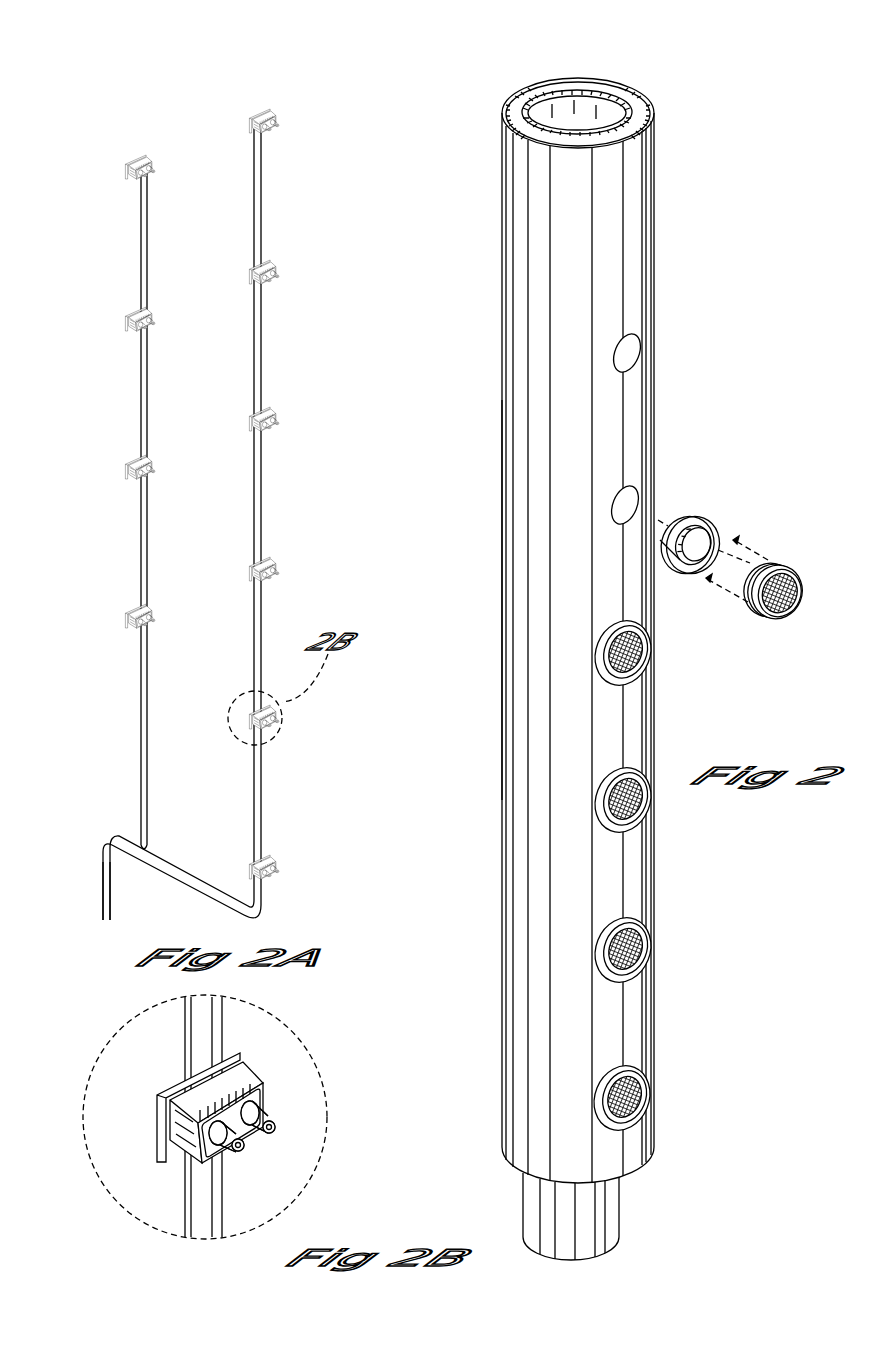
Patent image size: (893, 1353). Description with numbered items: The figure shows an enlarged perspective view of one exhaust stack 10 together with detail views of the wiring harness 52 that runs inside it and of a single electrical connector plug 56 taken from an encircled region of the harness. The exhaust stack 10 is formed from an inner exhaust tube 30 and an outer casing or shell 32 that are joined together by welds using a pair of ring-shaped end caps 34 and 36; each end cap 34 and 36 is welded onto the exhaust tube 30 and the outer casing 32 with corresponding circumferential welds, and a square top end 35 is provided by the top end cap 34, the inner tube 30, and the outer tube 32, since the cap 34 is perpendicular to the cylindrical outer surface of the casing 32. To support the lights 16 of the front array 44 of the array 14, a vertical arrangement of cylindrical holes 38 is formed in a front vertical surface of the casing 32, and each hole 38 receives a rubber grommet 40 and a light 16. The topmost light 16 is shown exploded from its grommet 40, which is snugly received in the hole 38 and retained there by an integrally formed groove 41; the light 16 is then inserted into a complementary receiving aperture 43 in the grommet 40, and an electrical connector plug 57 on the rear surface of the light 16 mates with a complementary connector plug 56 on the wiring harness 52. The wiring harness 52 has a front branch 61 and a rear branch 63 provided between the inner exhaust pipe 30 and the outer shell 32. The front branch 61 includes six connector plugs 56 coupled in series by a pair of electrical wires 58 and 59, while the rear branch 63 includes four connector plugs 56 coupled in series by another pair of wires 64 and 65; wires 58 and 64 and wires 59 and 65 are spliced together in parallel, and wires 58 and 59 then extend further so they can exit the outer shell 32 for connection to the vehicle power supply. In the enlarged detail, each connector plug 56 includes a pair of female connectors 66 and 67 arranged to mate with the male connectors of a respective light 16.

In FIG. 2, the exhaust stack 10 is at (455, 140).
In FIG. 2, the array 14 is at (666, 582).
In FIG. 2, the light 16 is at (790, 618).
In FIG. 2, the inner exhaust tube 30 is at (566, 112).
In FIG. 2, the outer casing 32 is at (500, 600).
In FIG. 2, the top end cap 34 is at (506, 106).
In FIG. 2, the square top end 35 is at (655, 93).
In FIG. 2, the end cap 36 is at (640, 1165).
In FIG. 2, the aperture 38 is at (643, 357).
In FIG. 2, the grommet 40 is at (628, 1072).
In FIG. 2, the groove 41 is at (687, 521).
In FIG. 2, the receiving aperture 43 is at (718, 538).
In FIG. 2, the front array 44 is at (671, 676).
In FIG. 2A, the electrical wiring harness 52 is at (205, 488).
In FIG. 2A, the electrical connector plug 56 is at (130, 325).
In FIG. 2B, the electrical connector plug 56 is at (272, 1111).
In FIG. 2, the electrical connector plug 57 is at (763, 566).
In FIG. 2A, the electrical wire 58 is at (248, 836).
In FIG. 2B, the electrical wire 58 is at (184, 1205).
In FIG. 2A, the electrical wire 59 is at (262, 818).
In FIG. 2B, the electrical wire 59 is at (220, 1178).
In FIG. 2A, the front branch 61 is at (266, 505).
In FIG. 2A, the rear branch 63 is at (137, 582).
In FIG. 2A, the electrical wire 64 is at (138, 716).
In FIG. 2A, the electrical wire 65 is at (148, 698).
In FIG. 2B, the female connector 66 is at (247, 1148).
In FIG. 2B, the female connector 67 is at (278, 1132).